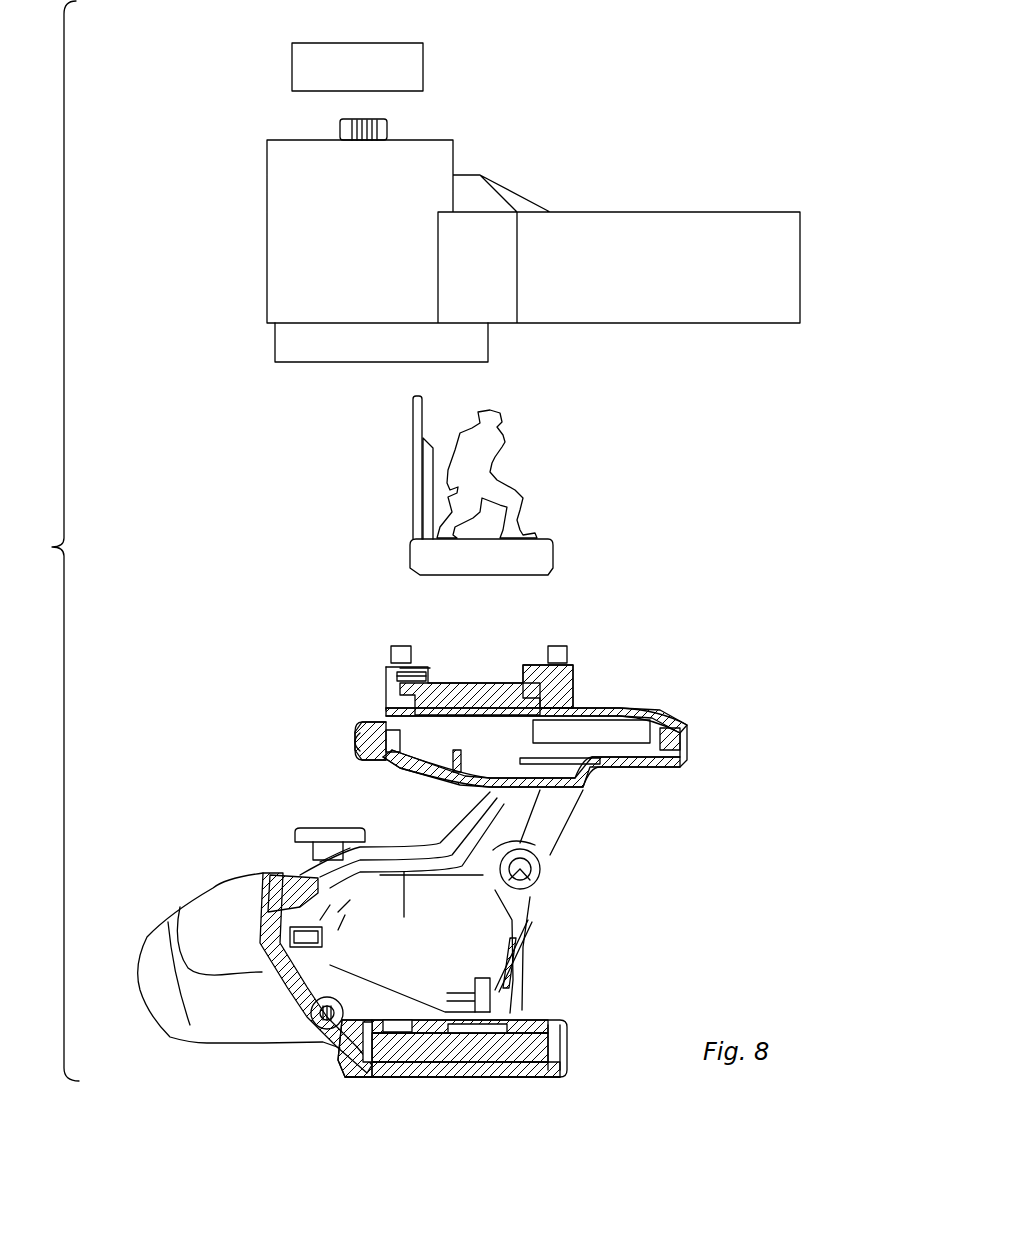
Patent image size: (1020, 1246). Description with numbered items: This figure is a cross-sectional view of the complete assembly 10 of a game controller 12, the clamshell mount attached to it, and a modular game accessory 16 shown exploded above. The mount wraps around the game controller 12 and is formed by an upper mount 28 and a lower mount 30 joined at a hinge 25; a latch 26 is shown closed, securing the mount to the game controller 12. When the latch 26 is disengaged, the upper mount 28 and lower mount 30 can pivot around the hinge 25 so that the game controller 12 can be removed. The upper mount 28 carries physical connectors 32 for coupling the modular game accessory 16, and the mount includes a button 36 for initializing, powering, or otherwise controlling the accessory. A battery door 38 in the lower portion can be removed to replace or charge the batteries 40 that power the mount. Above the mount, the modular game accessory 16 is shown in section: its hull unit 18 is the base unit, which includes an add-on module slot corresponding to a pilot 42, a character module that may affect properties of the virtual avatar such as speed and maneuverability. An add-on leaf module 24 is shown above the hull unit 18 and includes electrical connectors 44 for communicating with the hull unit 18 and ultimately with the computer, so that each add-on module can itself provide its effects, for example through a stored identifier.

The complete assembly 10 is at (43, 541).
The game controller 12 is at (163, 1043).
The modular game accessory 16 is at (748, 182).
The hull unit 18 is at (271, 366).
The add-on leaf module 24 is at (470, 44).
The hinge 25 is at (542, 873).
The latch 26 is at (287, 1000).
The upper mount 28 is at (453, 830).
The lower mount 30 is at (575, 1016).
The physical connectors 32 is at (563, 645).
The button 36 is at (356, 742).
The battery door 38 is at (455, 1078).
The batteries 40 is at (520, 1048).
The pilot 42 is at (498, 437).
The electrical connectors 44 is at (389, 129).